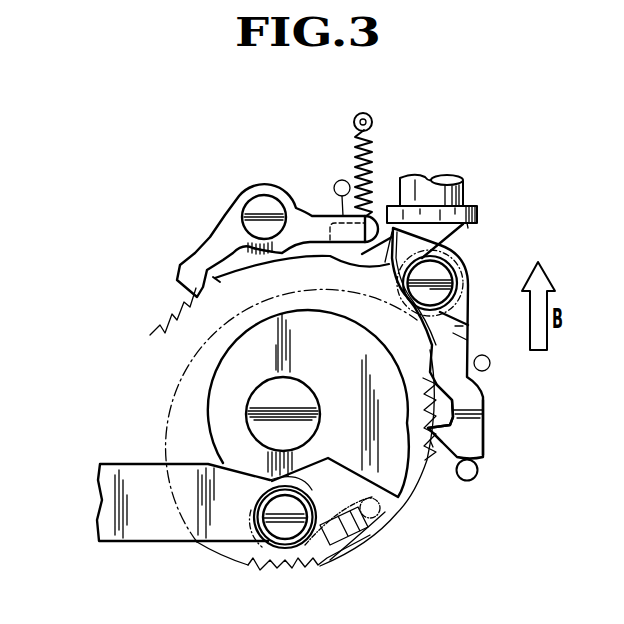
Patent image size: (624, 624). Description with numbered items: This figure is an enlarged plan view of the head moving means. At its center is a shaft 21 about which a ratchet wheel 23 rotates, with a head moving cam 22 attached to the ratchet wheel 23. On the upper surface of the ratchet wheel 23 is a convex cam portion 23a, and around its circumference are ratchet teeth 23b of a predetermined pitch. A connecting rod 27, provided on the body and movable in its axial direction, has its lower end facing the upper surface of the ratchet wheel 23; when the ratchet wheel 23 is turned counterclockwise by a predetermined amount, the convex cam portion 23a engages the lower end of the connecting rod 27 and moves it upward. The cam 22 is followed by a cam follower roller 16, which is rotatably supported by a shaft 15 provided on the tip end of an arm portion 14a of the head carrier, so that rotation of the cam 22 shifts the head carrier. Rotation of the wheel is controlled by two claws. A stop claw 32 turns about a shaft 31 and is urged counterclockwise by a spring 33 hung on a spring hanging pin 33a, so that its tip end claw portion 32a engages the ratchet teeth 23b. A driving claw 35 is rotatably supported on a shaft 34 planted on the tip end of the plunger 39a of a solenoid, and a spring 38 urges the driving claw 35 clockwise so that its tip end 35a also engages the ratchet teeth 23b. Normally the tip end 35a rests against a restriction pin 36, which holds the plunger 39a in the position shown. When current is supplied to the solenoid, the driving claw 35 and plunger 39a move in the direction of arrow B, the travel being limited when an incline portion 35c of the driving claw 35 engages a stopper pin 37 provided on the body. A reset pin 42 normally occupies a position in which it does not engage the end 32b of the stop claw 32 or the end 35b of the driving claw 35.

The arm portion 14a is at (118, 470).
The shaft 15 is at (285, 530).
The cam follower roller 16 is at (312, 548).
The shaft 21 is at (250, 420).
The head moving cam 22 is at (210, 380).
The ratchet wheel 23 is at (148, 333).
The convex cam portion 23a is at (340, 542).
The ratchet teeth 23b is at (252, 566).
The connecting rod 27 is at (395, 510).
The shaft 31 is at (264, 205).
The stop claw 32 is at (238, 197).
The tip end claw portion 32a is at (182, 265).
The end of the stop claw 32b is at (382, 212).
The spring 33 is at (378, 160).
The spring hanging pin 33a is at (366, 113).
The shaft 34 is at (458, 297).
The driving claw 35 is at (467, 340).
The tip end of the driving claw 35a is at (434, 442).
The end of the driving claw 35b is at (347, 258).
The incline portion 35c is at (485, 412).
The restriction pin 36 is at (469, 482).
The stopper pin 37 is at (490, 367).
The spring 38 is at (468, 252).
The plunger 39a is at (470, 210).
The reset pin 42 is at (337, 181).